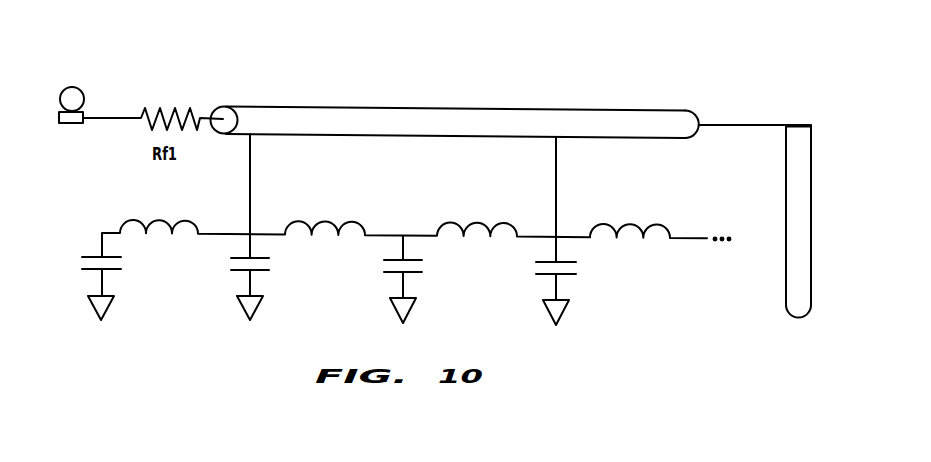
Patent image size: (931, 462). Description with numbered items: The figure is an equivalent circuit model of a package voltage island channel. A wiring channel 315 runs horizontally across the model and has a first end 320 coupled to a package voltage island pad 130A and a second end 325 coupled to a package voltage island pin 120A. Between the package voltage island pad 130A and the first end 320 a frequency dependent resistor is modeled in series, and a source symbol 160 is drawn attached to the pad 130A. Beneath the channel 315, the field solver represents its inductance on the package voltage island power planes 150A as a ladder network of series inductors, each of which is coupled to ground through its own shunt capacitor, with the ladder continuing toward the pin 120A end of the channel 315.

The signal source 160 is at (72, 88).
The package voltage island pad 130A is at (72, 124).
The first end 320 is at (248, 112).
The wiring channel 315 is at (457, 113).
The second end 325 is at (667, 117).
The package voltage island power planes 150A is at (735, 203).
The package voltage island pin 120A is at (788, 268).